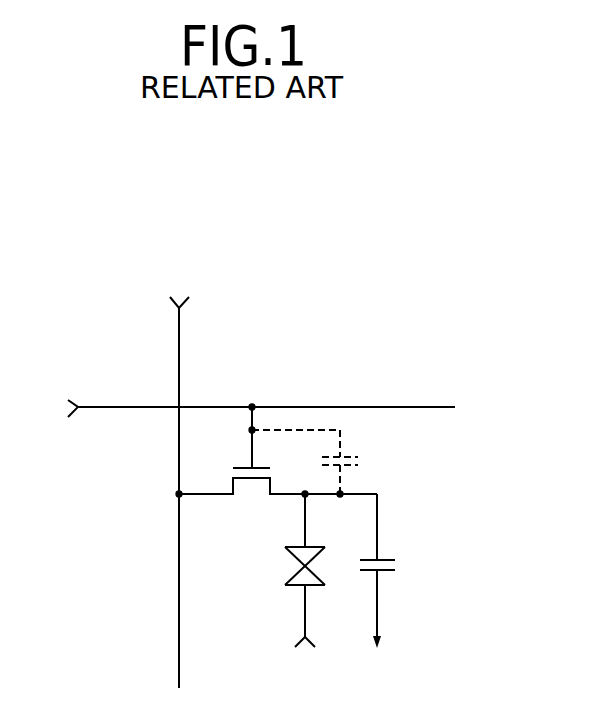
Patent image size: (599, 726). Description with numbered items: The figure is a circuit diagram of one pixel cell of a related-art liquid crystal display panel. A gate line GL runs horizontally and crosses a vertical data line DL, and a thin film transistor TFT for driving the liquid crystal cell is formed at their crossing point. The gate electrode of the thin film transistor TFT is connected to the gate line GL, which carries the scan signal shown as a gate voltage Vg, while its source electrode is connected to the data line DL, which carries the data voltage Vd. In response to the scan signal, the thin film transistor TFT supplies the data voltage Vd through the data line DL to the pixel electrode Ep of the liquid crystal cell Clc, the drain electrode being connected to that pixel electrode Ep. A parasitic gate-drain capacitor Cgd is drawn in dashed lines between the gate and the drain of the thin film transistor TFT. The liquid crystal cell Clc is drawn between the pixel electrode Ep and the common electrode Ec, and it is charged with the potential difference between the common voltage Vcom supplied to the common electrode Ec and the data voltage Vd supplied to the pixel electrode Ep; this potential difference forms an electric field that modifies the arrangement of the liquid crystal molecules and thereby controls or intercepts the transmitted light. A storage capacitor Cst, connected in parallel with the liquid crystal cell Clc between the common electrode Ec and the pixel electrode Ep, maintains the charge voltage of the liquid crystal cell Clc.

The data line DL is at (199, 498).
The data voltage Vd is at (177, 287).
The gate line GL is at (266, 427).
The gate voltage Vg is at (53, 404).
The thin film transistor TFT is at (276, 450).
The gate-drain capacitor Cgd is at (332, 460).
The liquid crystal cell Clc is at (286, 565).
The pixel electrode Ep is at (317, 543).
The common electrode Ec is at (317, 585).
The common voltage Vcom is at (302, 655).
The storage capacitor Cst is at (401, 571).